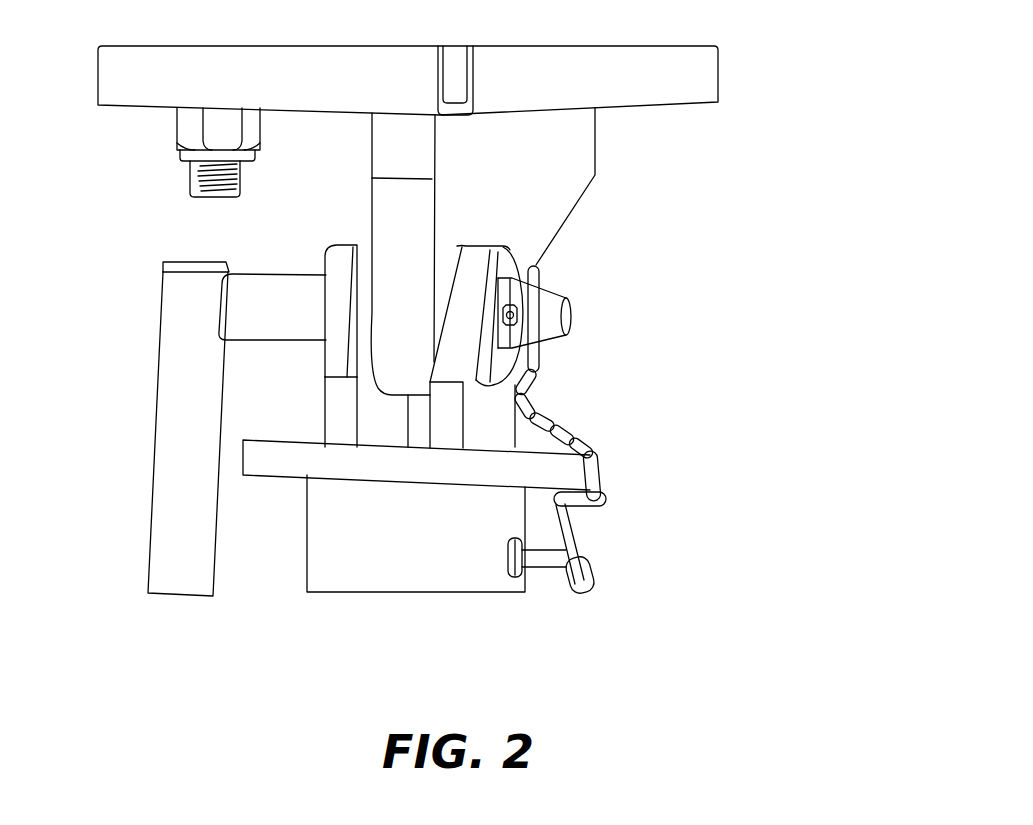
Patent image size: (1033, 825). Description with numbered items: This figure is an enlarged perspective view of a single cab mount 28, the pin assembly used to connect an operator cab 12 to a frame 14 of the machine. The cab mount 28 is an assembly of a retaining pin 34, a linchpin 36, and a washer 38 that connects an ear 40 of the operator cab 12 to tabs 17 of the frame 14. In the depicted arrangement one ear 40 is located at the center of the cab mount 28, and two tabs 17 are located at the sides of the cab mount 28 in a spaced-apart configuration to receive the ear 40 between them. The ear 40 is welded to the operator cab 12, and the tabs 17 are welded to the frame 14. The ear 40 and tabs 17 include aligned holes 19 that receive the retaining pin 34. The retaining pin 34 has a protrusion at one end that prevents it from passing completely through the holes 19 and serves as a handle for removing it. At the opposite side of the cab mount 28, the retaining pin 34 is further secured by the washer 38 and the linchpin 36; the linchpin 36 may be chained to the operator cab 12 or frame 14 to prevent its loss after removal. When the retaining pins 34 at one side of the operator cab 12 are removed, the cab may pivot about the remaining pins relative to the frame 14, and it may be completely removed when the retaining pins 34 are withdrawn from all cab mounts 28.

The operator cab 12 is at (97, 107).
The cab mount 28 is at (750, 105).
The ear 40 is at (403, 264).
The retaining pin 34 is at (232, 308).
The holes 19 is at (332, 332).
The washer 38 is at (506, 250).
The linchpin 36 is at (516, 316).
The tabs 17 is at (343, 430).
The frame 14 is at (403, 555).